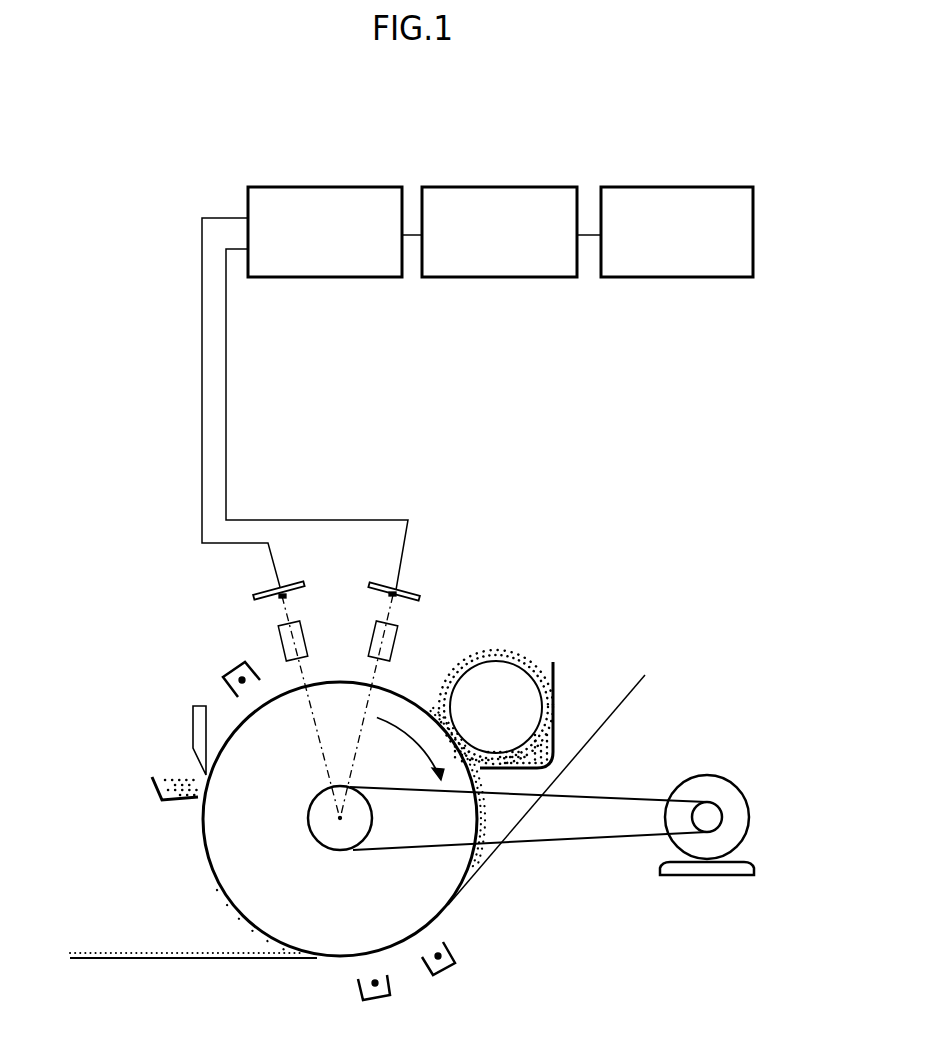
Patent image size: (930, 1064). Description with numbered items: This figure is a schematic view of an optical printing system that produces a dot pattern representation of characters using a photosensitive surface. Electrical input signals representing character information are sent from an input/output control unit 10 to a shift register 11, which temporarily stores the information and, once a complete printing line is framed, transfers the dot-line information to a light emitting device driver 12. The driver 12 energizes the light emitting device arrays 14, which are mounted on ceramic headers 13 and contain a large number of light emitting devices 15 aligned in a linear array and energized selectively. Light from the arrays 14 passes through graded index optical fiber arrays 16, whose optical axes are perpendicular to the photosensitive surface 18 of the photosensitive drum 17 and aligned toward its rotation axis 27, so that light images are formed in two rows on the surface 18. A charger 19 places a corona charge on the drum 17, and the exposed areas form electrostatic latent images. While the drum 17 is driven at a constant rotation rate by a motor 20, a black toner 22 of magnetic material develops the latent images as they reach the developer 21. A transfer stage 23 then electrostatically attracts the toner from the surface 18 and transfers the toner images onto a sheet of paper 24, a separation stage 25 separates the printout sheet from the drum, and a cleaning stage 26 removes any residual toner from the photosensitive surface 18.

The input/output control unit 10 is at (677, 201).
The shift register 11 is at (511, 201).
The light emitting device driver 12 is at (312, 358).
The ceramic header 13 is at (336, 575).
The light emitting device array 14 is at (340, 616).
The light emitting device 15 is at (337, 707).
The graded index optical fiber array 16 is at (338, 648).
The photosensitive drum 17 is at (209, 710).
The photosensitive surface 18 is at (340, 802).
The charger 19 is at (230, 644).
The motor 20 is at (552, 793).
The developer 21 is at (502, 662).
The black toner 22 is at (311, 762).
The transfer stage 23 is at (472, 964).
The sheet of paper 24 is at (373, 816).
The separation stage 25 is at (339, 993).
The cleaning stage 26 is at (153, 757).
The rotation axis 27 is at (324, 828).